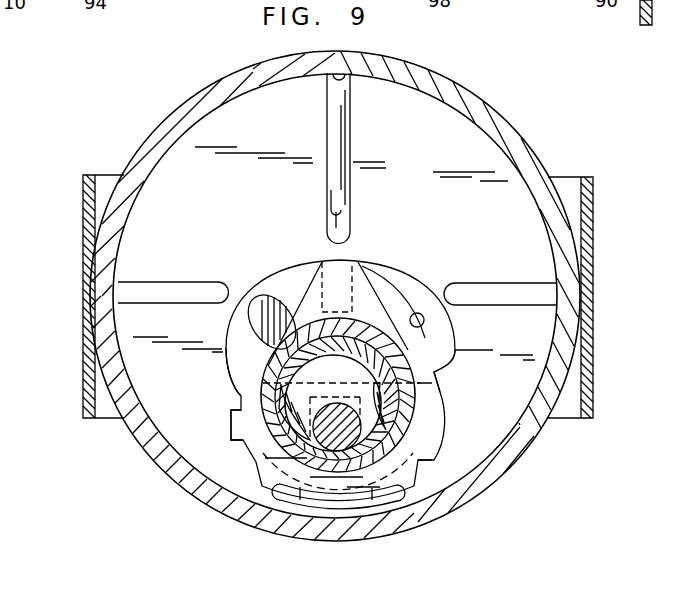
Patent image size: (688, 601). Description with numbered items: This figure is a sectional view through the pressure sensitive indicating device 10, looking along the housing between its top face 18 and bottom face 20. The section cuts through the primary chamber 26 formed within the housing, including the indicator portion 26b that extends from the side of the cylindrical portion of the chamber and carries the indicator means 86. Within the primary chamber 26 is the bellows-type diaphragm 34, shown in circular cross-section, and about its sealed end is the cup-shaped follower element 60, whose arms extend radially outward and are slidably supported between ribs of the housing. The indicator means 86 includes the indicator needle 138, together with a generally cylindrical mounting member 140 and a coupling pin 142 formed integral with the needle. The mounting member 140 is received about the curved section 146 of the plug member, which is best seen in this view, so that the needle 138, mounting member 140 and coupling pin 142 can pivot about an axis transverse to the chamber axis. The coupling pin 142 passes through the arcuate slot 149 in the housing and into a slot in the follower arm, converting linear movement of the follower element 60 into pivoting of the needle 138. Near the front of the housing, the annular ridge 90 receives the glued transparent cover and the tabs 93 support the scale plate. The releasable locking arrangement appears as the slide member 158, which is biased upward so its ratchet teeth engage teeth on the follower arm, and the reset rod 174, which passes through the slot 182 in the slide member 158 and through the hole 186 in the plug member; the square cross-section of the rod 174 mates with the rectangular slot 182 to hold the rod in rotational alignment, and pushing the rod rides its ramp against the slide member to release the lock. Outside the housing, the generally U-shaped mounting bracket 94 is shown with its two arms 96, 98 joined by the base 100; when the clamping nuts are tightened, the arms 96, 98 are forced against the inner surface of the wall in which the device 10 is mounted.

The pressure sensitive indicating device 10 is at (600, 143).
The top face 18 is at (350, 58).
The bottom face 20 is at (338, 532).
The primary chamber 26 is at (426, 123).
The indicator portion 26b is at (486, 100).
The diaphragm 34 is at (282, 300).
The follower element 60 is at (399, 316).
The indicator means 86 is at (372, 262).
The annular ridge 90 is at (507, 127).
The tabs 93 is at (335, 76).
The mounting bracket 94 is at (80, 238).
The arm 96 is at (82, 360).
The arm 98 is at (595, 365).
The base 100 is at (112, 405).
The indicator needle 138 is at (350, 212).
The mounting member 140 is at (436, 374).
The coupling pin 142 is at (320, 285).
The curved section 146 is at (262, 383).
The arcuate slot 149 is at (428, 322).
The slide member 158 is at (420, 500).
The reset rod 174 is at (338, 412).
The slot 182 is at (256, 401).
The hole 186 is at (305, 432).